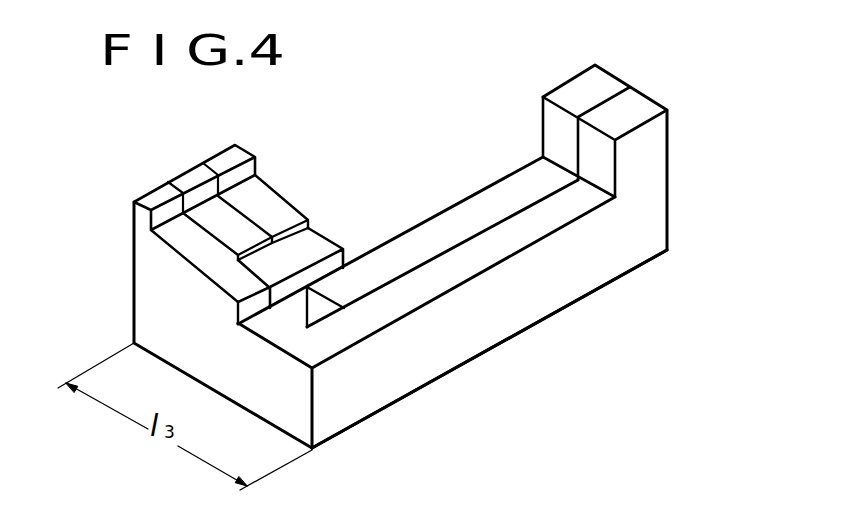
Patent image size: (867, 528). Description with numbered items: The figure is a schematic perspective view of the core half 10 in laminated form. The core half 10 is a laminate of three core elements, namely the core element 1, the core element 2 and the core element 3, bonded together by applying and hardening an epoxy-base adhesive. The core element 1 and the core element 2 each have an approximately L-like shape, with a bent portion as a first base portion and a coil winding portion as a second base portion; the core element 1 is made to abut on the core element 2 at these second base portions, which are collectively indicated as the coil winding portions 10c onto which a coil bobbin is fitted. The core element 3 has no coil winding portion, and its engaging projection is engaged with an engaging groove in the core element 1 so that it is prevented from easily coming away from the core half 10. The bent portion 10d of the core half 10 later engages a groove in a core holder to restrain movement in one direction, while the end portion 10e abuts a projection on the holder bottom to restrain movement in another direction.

The core half 10 is at (680, 197).
The core element 1 is at (456, 218).
The core element 2 is at (530, 302).
The core element 3 is at (190, 178).
The coil winding portions 10c is at (397, 385).
The bent portion 10d is at (197, 343).
The end portion 10e is at (650, 132).